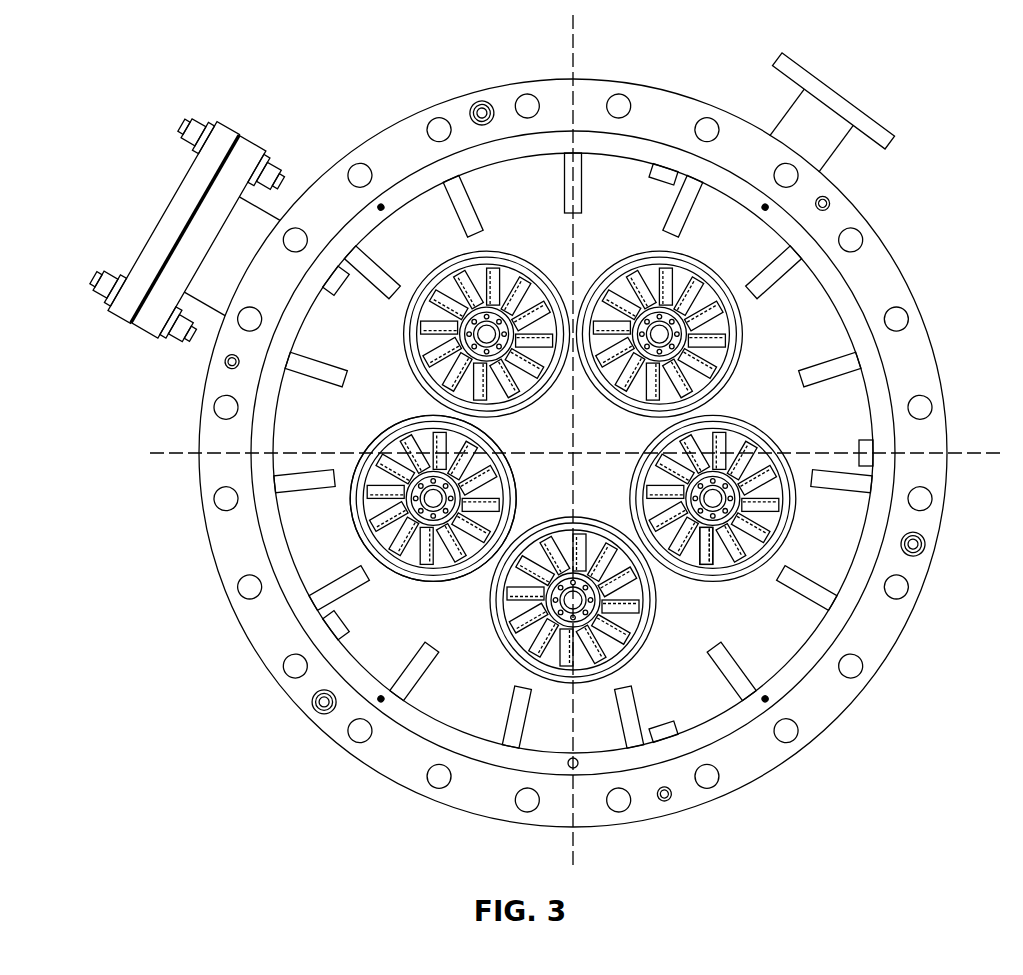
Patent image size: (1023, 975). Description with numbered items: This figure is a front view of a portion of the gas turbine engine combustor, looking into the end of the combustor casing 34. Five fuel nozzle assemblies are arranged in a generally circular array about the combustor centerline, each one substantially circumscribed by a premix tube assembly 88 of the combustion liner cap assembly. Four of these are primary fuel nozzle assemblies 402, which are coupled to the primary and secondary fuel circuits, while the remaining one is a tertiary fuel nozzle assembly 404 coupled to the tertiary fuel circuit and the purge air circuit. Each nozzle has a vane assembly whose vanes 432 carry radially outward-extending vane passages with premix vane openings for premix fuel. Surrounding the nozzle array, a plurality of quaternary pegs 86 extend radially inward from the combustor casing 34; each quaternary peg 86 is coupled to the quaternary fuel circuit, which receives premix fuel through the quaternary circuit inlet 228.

The combustor casing 34 is at (832, 730).
The quaternary peg 86 is at (426, 672).
The premix tube assembly 88 is at (381, 444).
The quaternary circuit inlet 228 is at (847, 97).
The primary fuel nozzle assembly 402 is at (497, 246).
The tertiary fuel nozzle assembly 404 is at (581, 688).
The vane 432 is at (707, 555).